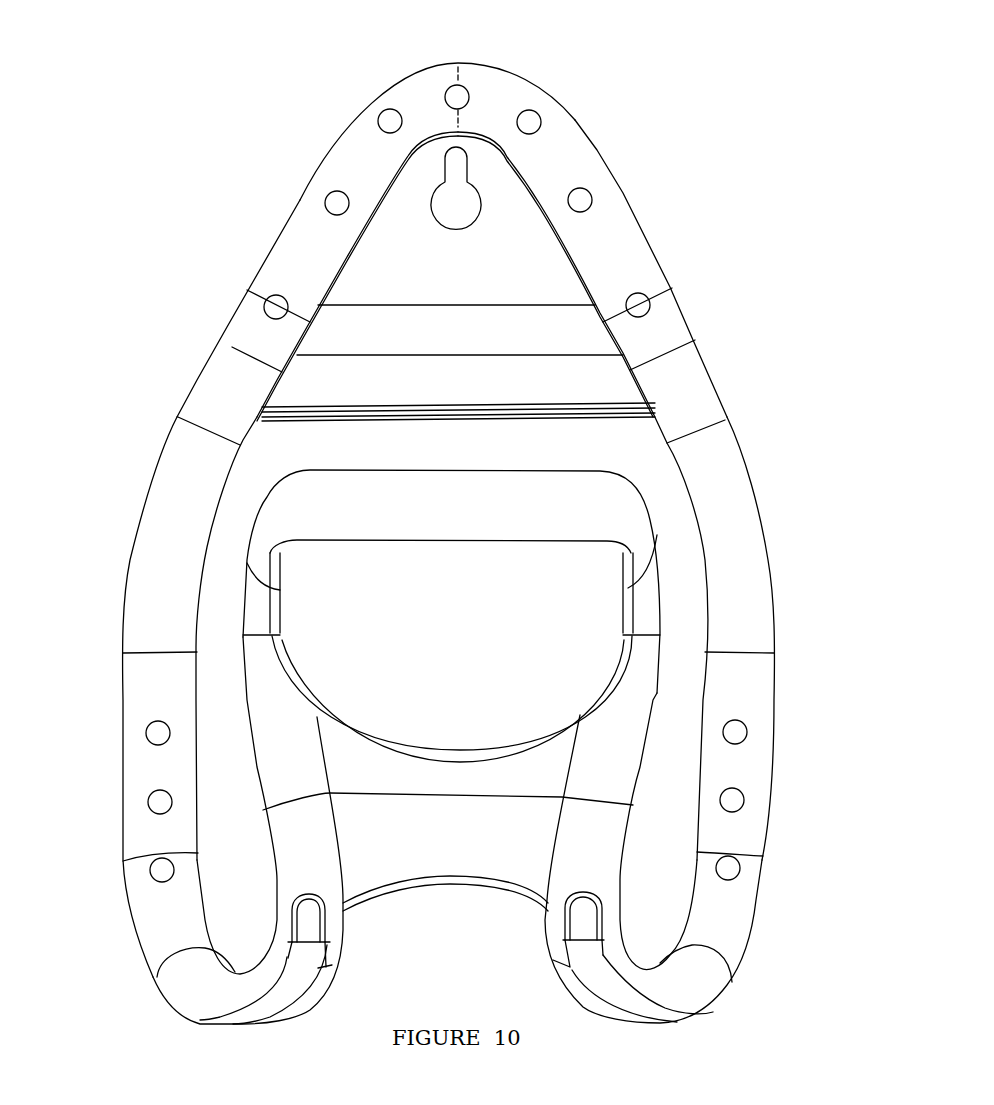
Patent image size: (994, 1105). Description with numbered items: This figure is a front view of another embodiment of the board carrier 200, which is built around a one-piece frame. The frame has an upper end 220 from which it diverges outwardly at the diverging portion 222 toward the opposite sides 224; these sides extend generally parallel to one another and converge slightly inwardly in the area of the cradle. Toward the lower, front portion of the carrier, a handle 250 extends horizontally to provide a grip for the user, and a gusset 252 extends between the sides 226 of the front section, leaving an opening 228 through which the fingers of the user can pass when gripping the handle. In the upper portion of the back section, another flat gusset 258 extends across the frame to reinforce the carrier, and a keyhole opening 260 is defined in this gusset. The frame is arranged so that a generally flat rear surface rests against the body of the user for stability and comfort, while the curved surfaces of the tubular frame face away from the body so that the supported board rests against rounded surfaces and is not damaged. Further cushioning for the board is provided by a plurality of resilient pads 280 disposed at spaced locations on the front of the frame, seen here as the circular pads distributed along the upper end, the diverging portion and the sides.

The carrier 200 is at (686, 257).
The upper end 220 is at (450, 63).
The diverging portion 222 is at (280, 233).
The opposite sides 224 is at (123, 678).
The sides of the front section 226 is at (622, 783).
The opening 228 is at (452, 673).
The handle 250 is at (447, 482).
The gusset 252 is at (468, 880).
The flat gusset 258 is at (562, 303).
The keyhole opening 260 is at (477, 213).
The resilient pads 280 is at (385, 121).